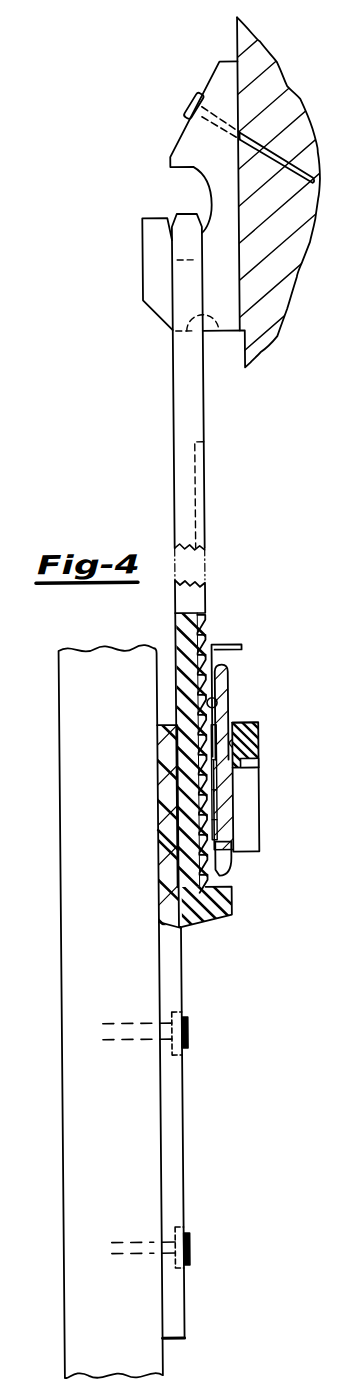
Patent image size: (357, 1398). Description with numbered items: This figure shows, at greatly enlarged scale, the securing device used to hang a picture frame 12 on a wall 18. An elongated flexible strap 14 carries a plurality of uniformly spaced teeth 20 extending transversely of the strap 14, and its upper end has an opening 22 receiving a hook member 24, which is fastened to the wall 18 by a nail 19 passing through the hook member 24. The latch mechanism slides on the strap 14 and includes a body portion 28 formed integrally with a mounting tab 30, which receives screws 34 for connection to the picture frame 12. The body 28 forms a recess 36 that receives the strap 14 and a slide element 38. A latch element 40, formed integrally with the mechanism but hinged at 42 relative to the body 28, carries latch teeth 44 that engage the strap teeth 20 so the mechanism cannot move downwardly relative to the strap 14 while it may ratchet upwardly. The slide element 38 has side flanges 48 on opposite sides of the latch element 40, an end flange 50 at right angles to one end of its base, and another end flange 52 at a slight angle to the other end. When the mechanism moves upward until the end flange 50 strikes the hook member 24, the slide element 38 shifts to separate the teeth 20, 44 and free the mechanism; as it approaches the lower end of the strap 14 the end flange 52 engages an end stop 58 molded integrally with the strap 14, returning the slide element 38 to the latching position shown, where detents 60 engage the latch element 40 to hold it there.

The picture frame 12 is at (77, 784).
The strap element 14 is at (179, 480).
The wall 18 is at (278, 85).
The nail 19 is at (190, 100).
The teeth 20 is at (208, 632).
The opening 22 is at (222, 334).
The hook member 24 is at (153, 228).
The body portion 28 is at (247, 722).
The mounting tab 30 is at (173, 944).
The screws 34 is at (186, 1033).
The recess 36 is at (258, 726).
The slide element 38 is at (222, 695).
The latch element 40 is at (230, 795).
The hinge 42 is at (243, 763).
The latch teeth 44 is at (175, 838).
The side flanges 48 is at (210, 677).
The end flange 50 is at (242, 645).
The end flange 52 is at (218, 877).
The end stop 58 is at (226, 902).
The detents 60 is at (222, 707).